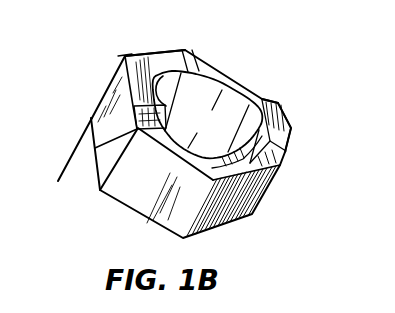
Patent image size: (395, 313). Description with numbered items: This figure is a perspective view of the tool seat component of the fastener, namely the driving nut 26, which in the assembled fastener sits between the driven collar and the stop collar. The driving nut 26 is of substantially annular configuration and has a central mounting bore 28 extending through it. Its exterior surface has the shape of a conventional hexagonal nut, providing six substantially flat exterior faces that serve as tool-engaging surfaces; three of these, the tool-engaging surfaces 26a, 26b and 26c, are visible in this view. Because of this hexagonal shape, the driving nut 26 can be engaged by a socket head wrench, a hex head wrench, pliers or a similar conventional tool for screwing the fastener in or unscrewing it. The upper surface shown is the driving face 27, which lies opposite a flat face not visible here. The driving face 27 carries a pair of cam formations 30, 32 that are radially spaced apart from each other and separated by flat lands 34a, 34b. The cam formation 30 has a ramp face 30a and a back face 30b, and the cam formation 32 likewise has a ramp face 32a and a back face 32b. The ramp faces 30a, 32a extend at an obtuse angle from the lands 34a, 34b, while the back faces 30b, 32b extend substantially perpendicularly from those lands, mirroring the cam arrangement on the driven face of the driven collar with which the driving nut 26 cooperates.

The driving nut 26 is at (299, 104).
The tool-engaging surface 26a is at (91, 148).
The tool-engaging surface 26b is at (134, 191).
The tool-engaging surface 26c is at (236, 205).
The driving face 27 is at (155, 51).
The central mounting bore 28 is at (216, 127).
The cam formation 30 is at (122, 82).
The ramp face 30a is at (70, 205).
The back face 30b is at (125, 56).
The cam formation 32 is at (293, 128).
The ramp face 32a is at (318, 87).
The back face 32b is at (278, 151).
The flat land 34a is at (230, 50).
The flat land 34b is at (243, 163).